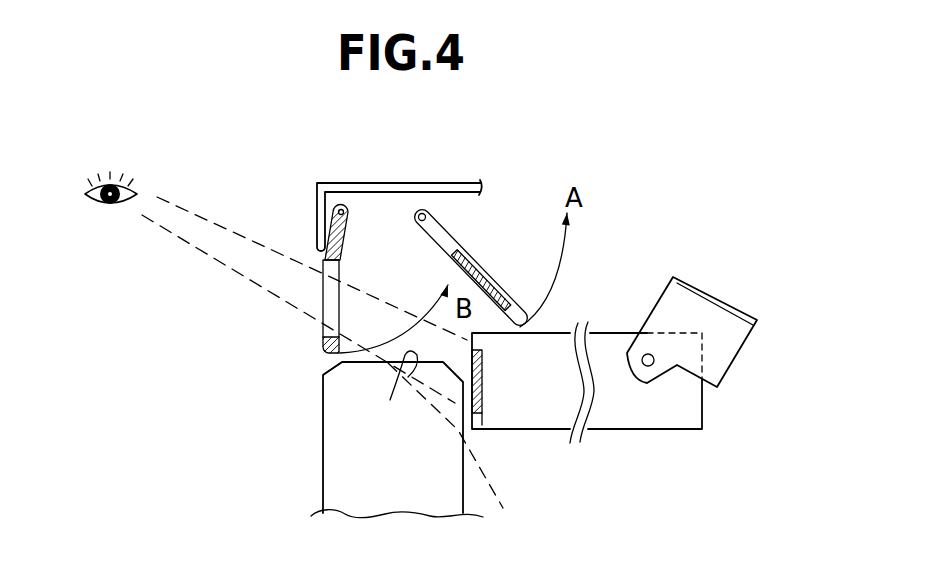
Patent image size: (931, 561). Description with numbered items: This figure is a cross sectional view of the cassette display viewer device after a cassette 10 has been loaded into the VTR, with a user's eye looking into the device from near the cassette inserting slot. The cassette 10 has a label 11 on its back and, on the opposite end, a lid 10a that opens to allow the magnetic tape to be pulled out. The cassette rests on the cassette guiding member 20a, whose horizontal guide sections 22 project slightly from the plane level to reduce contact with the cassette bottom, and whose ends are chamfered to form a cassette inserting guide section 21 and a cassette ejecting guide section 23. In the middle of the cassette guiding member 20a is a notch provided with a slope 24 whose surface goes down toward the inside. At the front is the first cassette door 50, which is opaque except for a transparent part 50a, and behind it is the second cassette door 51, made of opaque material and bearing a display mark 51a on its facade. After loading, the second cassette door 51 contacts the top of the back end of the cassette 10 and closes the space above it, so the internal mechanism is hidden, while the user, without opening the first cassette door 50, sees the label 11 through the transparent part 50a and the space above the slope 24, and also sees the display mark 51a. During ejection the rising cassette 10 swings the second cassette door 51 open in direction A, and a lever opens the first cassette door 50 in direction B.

The cassette 10 is at (655, 412).
The lid 10a is at (713, 297).
The label 11 is at (481, 412).
The cassette guiding member 20a is at (316, 455).
The cassette inserting guide section 21 is at (324, 368).
The cassette horizontal guide section 22 is at (394, 392).
The cassette ejecting guide section 23 is at (460, 367).
The slope 24 is at (465, 445).
The cassette door 50 is at (345, 229).
The transparent part 50a is at (336, 264).
The second cassette door 51 is at (433, 228).
The display mark 51a is at (470, 267).